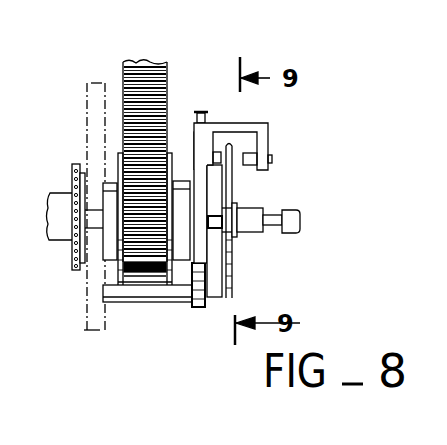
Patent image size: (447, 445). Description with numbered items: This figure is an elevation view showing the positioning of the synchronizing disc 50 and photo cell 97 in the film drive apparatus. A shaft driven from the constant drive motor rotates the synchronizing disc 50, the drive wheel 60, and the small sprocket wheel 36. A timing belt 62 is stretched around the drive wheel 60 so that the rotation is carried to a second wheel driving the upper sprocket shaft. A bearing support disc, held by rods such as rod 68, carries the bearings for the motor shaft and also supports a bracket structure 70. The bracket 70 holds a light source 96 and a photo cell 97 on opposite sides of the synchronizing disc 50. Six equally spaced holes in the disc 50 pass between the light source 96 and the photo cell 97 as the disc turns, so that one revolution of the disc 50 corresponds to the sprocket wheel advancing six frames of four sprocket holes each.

The small sprocket wheel 36 is at (73, 168).
The synchronizing disc 50 is at (232, 277).
The drive wheel 60 is at (110, 283).
The timing belt 62 is at (152, 73).
The rod 68 is at (117, 292).
The bracket structure 70 is at (259, 128).
The light source 96 is at (274, 158).
The photo cell 97 is at (193, 158).